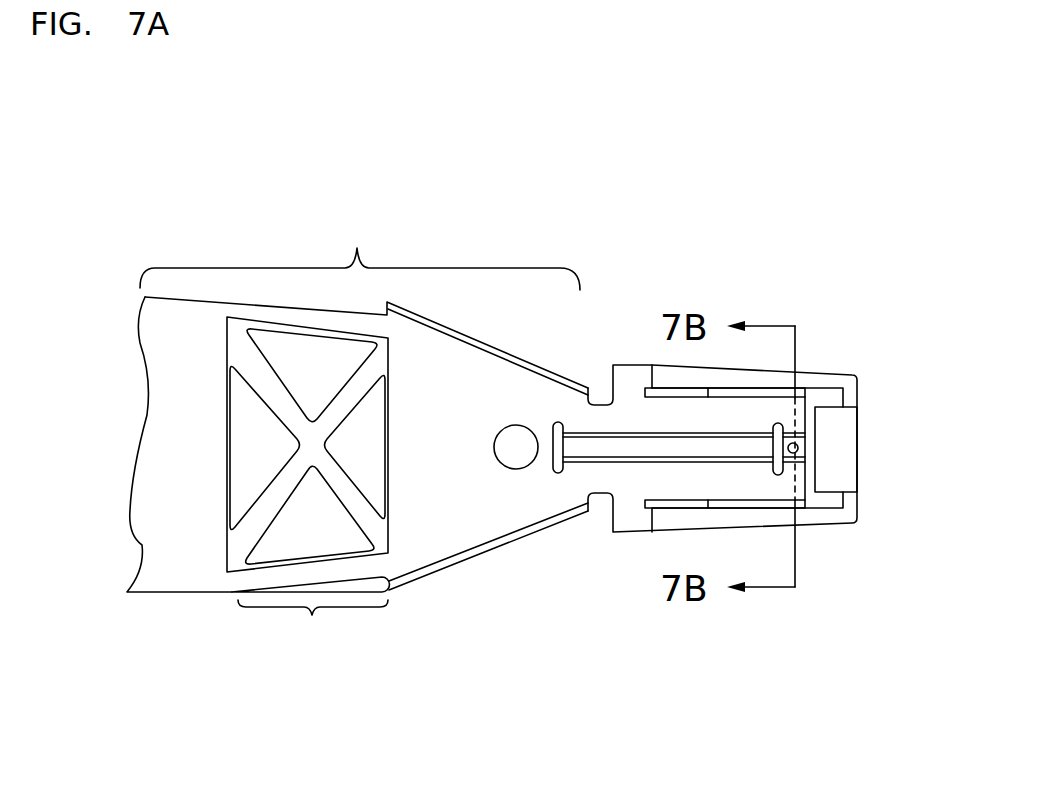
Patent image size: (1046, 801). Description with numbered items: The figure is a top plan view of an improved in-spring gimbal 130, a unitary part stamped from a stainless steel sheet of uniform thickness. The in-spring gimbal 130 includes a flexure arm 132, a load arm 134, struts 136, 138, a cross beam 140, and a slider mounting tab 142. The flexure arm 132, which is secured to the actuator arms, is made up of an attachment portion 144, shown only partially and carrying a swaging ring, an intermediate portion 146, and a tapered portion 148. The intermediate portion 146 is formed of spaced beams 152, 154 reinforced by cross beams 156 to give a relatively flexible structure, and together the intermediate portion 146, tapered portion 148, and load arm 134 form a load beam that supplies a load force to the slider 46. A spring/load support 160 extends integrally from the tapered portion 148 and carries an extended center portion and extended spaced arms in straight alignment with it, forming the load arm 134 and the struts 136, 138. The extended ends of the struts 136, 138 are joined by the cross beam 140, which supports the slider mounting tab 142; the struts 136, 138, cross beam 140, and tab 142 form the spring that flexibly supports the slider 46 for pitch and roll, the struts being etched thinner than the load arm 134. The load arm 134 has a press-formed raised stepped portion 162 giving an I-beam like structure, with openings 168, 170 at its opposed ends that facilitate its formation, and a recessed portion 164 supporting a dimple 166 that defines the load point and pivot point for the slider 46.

The in-spring gimbal 130 is at (622, 290).
The flexure arm 132 is at (360, 251).
The load arm 134 is at (665, 492).
The strut 136 is at (728, 377).
The strut 138 is at (740, 520).
The cross beam 140 is at (857, 393).
The slider mounting tab 142 is at (850, 445).
The attachment portion 144 is at (192, 454).
The intermediate portion 146 is at (313, 624).
The tapered portion 148 is at (475, 489).
The spaced beam 152 is at (292, 305).
The spaced beam 154 is at (245, 583).
The cross beams 156 is at (320, 447).
The spring/load support 160 is at (627, 490).
The raised stepped portion 162 is at (675, 433).
The recessed portion 164 is at (798, 448).
The dimple 166 is at (798, 450).
The opening 168 is at (553, 425).
The opening 170 is at (775, 463).
The slider 46 is at (818, 397).